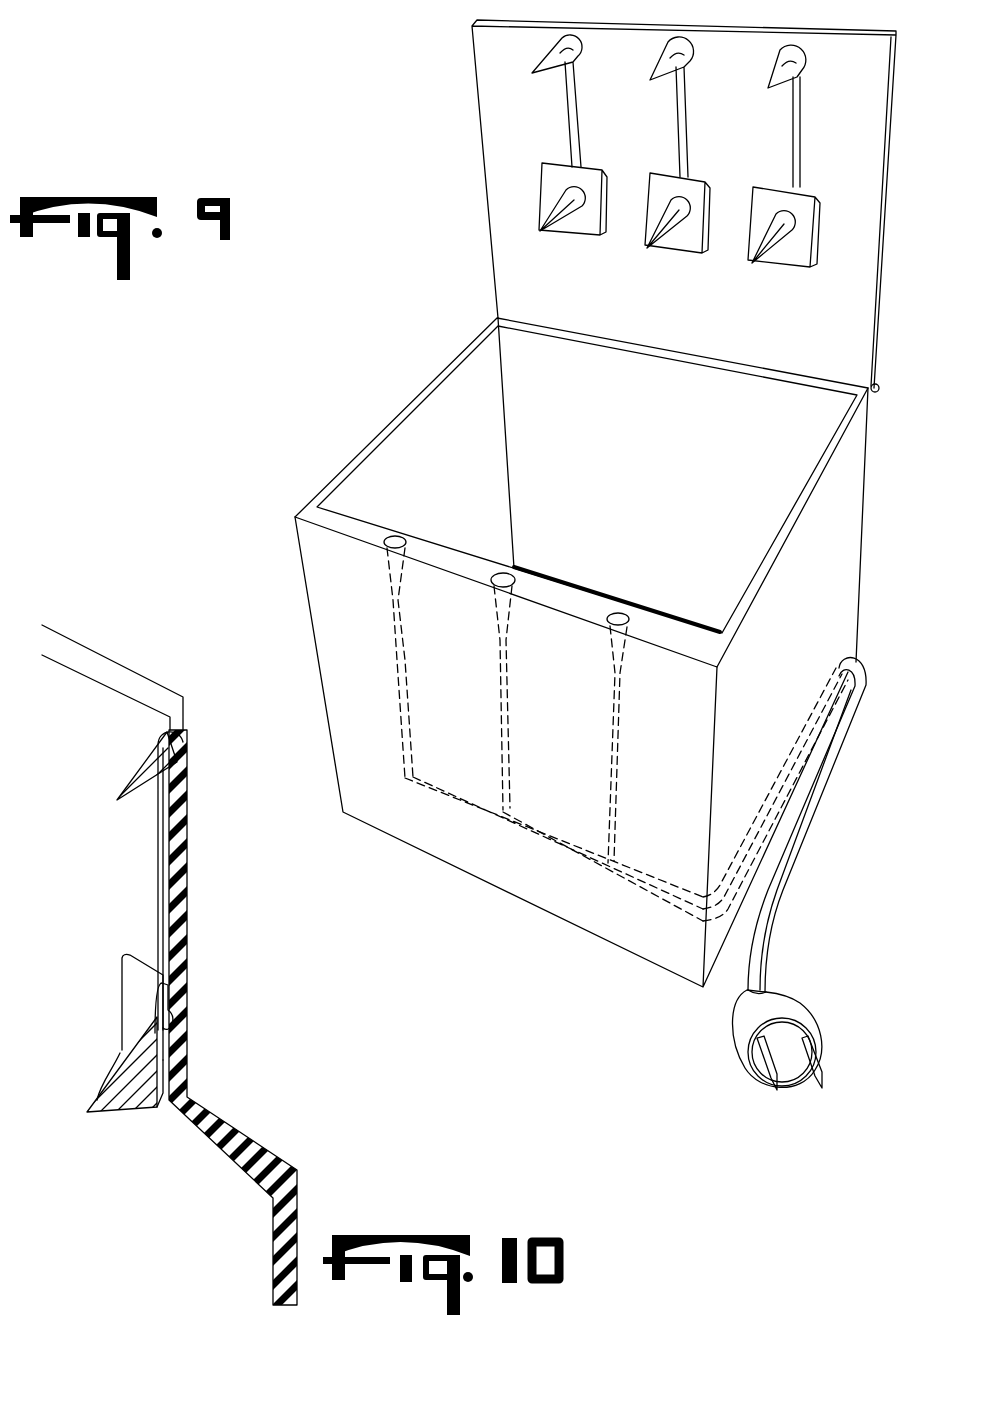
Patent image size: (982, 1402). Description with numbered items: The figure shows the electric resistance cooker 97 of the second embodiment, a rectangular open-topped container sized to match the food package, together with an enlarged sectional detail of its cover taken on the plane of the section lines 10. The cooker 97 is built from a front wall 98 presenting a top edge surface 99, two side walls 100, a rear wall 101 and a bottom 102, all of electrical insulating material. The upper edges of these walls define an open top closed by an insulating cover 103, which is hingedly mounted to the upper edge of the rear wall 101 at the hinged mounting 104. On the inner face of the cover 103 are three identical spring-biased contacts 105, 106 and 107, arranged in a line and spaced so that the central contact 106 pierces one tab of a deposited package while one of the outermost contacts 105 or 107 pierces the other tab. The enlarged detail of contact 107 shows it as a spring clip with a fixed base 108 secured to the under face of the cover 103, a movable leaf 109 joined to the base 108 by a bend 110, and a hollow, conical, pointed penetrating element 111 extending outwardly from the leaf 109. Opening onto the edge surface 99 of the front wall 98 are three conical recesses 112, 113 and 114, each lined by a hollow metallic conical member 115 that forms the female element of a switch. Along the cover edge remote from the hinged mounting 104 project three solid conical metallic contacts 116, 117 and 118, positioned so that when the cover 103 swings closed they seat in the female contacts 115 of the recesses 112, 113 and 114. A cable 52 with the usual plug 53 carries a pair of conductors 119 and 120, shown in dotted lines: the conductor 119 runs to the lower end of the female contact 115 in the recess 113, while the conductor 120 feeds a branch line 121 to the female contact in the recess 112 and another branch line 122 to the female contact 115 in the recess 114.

In FIG. 9, the section plane lines 10 is at (910, 283).
In FIG. 9, the cover 103 is at (852, 53).
In FIG. 9, the solid conical metallic contact 118 is at (578, 56).
In FIG. 9, the solid conical metallic contact 117 is at (690, 57).
In FIG. 9, the solid conical metallic contact 116 is at (806, 60).
In FIG. 10, the solid conical metallic contact 116 is at (137, 765).
In FIG. 9, the spring-biased contact 105 is at (567, 239).
In FIG. 9, the spring-biased contact 106 is at (678, 255).
In FIG. 9, the spring-biased contact 107 is at (785, 268).
In FIG. 10, the spring-biased contact 107 is at (121, 1105).
In FIG. 9, the side walls 100 is at (390, 425).
In FIG. 9, the rear wall 101 is at (660, 441).
In FIG. 9, the hinged mounting 104 is at (912, 410).
In FIG. 9, the conical recess 114 is at (399, 539).
In FIG. 9, the conical recess 113 is at (510, 570).
In FIG. 9, the conical recess 112 is at (618, 613).
In FIG. 9, the bottom 102 is at (563, 582).
In FIG. 9, the hollow metallic conical member 115 is at (610, 637).
In FIG. 9, the branch line 122 is at (480, 672).
In FIG. 9, the branch line 121 is at (683, 740).
In FIG. 9, the top edge surface 99 is at (713, 645).
In FIG. 9, the front wall 98 is at (347, 738).
In FIG. 9, the cooker 97 is at (463, 909).
In FIG. 9, the conductor 119 is at (636, 864).
In FIG. 9, the cable 52 is at (779, 946).
In FIG. 9, the plug 53 is at (778, 1032).
In FIG. 9, the conductor 120 is at (750, 975).
In FIG. 10, the bend 110 is at (143, 952).
In FIG. 10, the movable leaf 109 is at (130, 1002).
In FIG. 10, the penetrating element 111 is at (120, 1053).
In FIG. 10, the fixed base 108 is at (163, 1093).